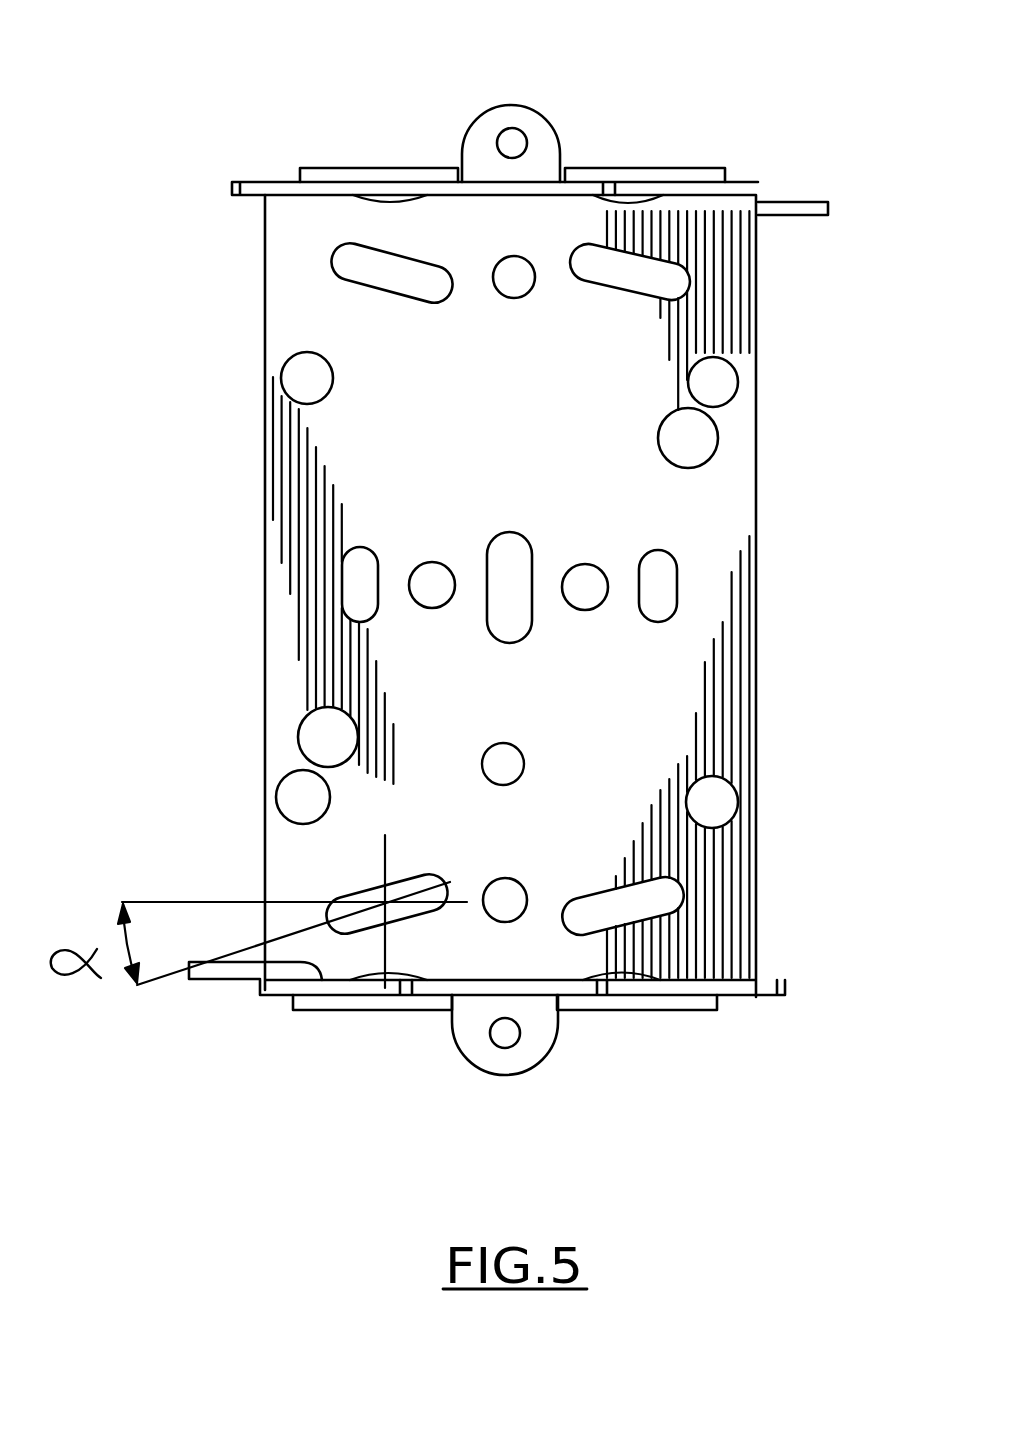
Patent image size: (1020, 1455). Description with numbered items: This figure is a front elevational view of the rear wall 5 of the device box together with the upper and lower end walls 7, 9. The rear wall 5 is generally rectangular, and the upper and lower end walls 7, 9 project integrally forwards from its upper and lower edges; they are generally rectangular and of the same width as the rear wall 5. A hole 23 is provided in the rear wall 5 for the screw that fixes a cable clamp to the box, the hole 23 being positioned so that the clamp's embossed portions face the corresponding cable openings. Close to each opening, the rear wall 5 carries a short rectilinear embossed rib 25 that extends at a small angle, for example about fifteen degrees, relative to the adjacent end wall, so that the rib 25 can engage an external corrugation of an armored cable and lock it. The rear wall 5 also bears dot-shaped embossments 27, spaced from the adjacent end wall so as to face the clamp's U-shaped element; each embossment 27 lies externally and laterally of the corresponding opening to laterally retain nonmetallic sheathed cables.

The rear wall 5 is at (705, 549).
The upper end wall 7 is at (623, 182).
The lower end wall 9 is at (670, 1013).
The hole 23 is at (516, 283).
The embossed rib 25 is at (593, 257).
The dot-shaped embossment 27 is at (300, 380).